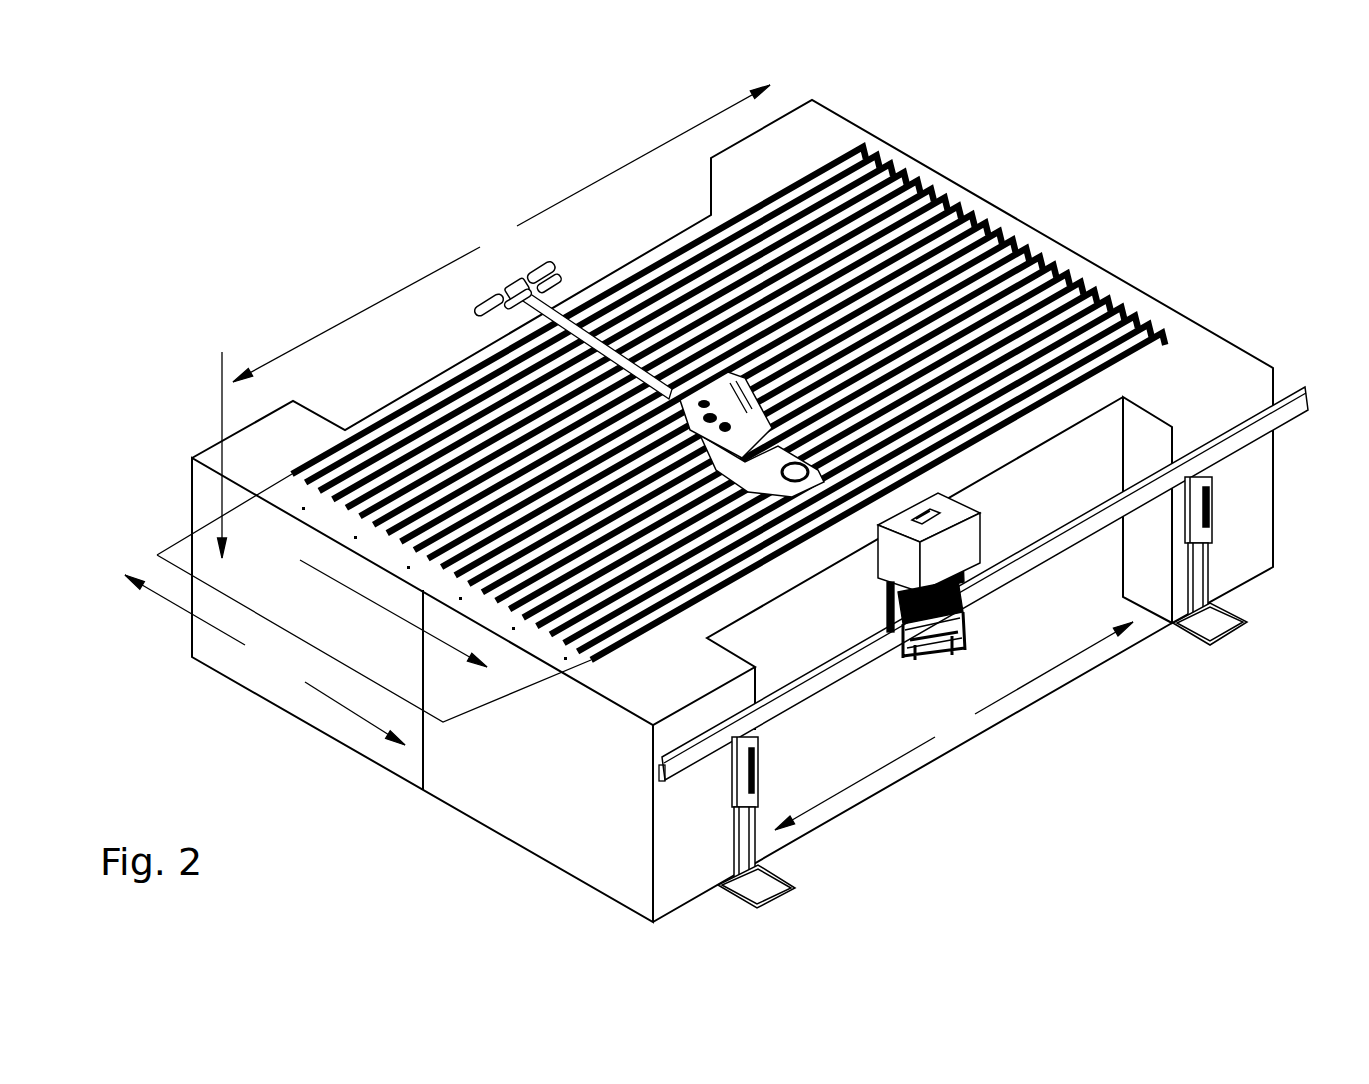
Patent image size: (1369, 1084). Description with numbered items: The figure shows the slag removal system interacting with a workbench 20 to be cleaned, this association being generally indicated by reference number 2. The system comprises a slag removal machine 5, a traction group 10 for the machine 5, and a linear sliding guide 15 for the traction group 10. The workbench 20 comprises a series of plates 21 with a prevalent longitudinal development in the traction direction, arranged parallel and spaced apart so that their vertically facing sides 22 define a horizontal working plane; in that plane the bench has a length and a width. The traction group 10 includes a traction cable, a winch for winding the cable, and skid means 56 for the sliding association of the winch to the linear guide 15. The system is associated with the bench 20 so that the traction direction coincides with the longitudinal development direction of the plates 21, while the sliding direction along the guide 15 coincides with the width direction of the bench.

The association 2 is at (222, 293).
The slag removal machine 5 is at (558, 265).
The traction group 10 is at (983, 511).
The linear sliding guide 15 is at (1082, 530).
The workbench 20 is at (922, 200).
The plates 21 is at (1176, 312).
The vertically facing sides 22 is at (1075, 262).
The skid means 56 is at (882, 614).